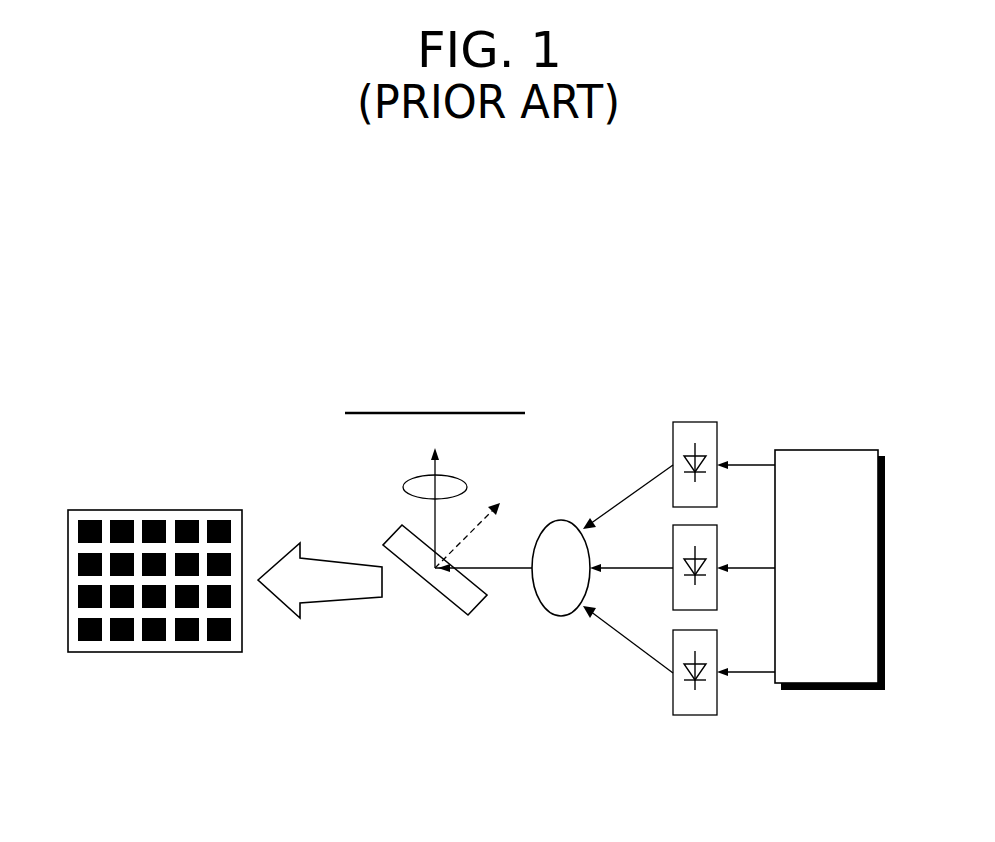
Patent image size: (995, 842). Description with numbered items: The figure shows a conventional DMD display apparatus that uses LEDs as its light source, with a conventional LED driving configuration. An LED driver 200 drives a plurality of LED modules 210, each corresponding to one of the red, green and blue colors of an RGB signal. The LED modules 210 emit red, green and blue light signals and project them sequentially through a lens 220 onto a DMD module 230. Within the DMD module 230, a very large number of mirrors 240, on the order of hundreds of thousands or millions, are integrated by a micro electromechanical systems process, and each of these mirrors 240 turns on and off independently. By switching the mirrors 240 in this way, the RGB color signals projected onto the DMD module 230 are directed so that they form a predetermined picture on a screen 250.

The LED driver 200 is at (823, 450).
The LED modules 210 is at (690, 421).
The lens 220 is at (566, 520).
The DMD module 230 is at (505, 646).
The mirrors 240 is at (181, 520).
The screen 250 is at (478, 411).